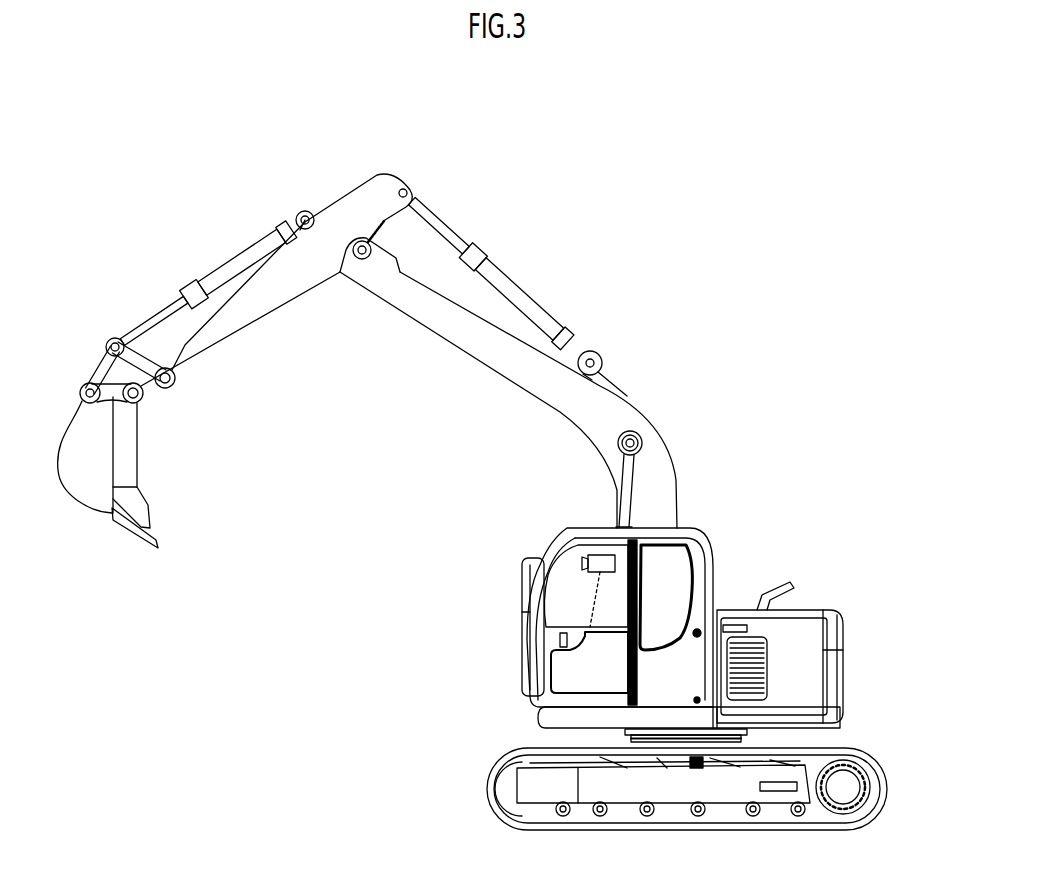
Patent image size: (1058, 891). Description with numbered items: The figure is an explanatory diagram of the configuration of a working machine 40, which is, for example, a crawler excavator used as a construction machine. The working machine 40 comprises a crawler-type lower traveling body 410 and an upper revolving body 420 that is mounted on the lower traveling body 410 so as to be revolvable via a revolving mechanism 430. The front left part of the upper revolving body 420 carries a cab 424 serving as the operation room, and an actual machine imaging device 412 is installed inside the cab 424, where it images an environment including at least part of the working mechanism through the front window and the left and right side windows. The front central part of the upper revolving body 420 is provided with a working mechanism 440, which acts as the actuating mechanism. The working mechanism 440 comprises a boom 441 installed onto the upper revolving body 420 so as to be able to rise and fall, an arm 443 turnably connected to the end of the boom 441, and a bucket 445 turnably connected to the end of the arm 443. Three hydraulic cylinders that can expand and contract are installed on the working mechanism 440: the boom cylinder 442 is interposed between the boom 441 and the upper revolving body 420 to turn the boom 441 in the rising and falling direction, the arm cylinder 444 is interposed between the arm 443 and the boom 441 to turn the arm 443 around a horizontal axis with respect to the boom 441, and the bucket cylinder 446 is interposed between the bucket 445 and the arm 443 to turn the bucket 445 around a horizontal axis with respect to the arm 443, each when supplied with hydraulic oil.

The working machine 40 is at (714, 150).
The lower traveling body 410 is at (507, 752).
The actual machine imaging device 412 is at (599, 556).
The upper revolving body 420 is at (862, 639).
The cab 424 is at (720, 518).
The revolving mechanism 430 is at (762, 738).
The working mechanism 440 is at (493, 204).
The boom 441 is at (663, 463).
The boom cylinder 442 is at (620, 508).
The arm 443 is at (260, 317).
The arm cylinder 444 is at (528, 290).
The bucket 445 is at (90, 492).
The bucket cylinder 446 is at (248, 250).